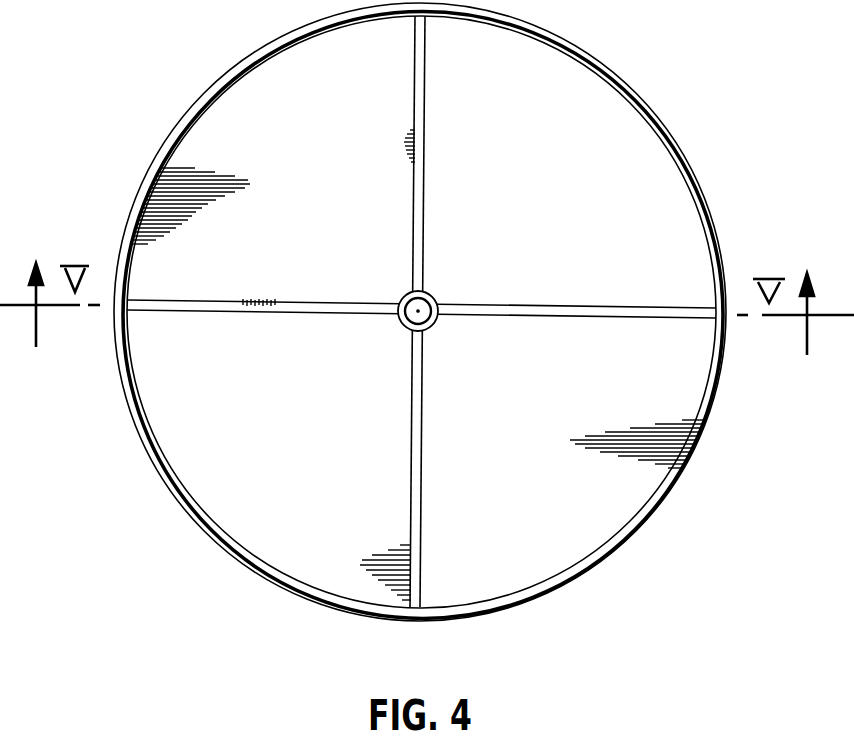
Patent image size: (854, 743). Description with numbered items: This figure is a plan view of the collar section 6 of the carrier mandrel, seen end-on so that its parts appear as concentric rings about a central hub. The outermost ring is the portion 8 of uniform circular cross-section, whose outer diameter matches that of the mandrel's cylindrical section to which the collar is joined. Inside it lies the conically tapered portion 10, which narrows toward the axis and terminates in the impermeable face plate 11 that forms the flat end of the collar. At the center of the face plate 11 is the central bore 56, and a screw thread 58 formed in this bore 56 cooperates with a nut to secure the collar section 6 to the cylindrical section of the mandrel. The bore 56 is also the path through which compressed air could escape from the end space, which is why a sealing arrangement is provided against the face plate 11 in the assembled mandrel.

The collar section 6 is at (418, 312).
The portion of uniform circular cross-section 8 is at (149, 162).
The conically tapered portion 10 is at (147, 445).
The impermeable face plate 11 is at (327, 179).
The central bore 56 is at (442, 296).
The screw thread 58 is at (437, 327).